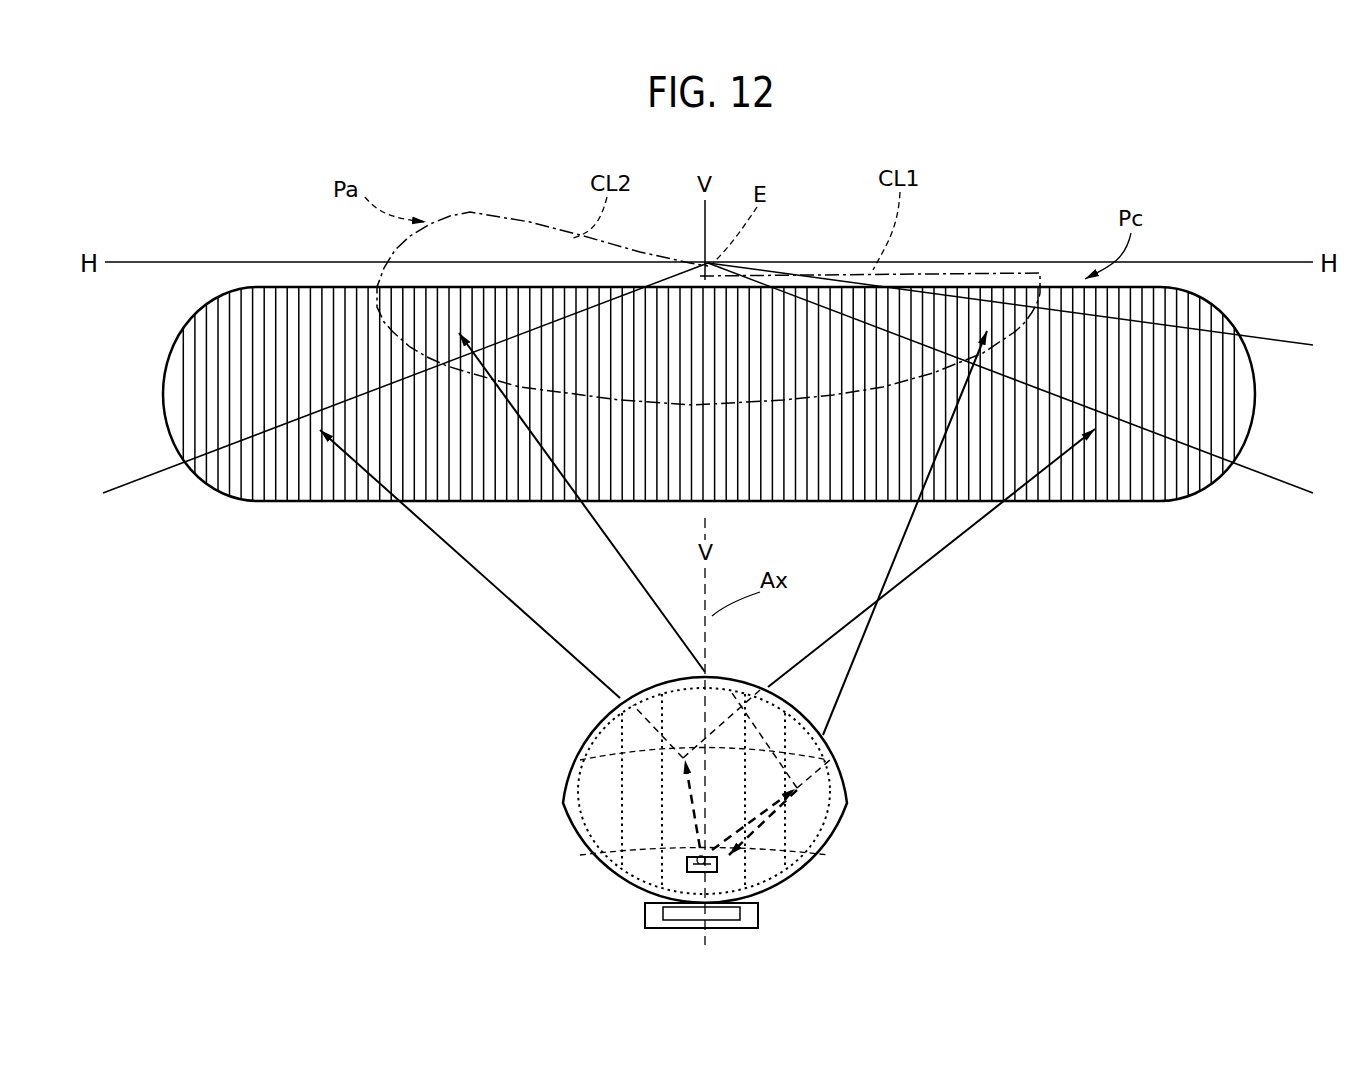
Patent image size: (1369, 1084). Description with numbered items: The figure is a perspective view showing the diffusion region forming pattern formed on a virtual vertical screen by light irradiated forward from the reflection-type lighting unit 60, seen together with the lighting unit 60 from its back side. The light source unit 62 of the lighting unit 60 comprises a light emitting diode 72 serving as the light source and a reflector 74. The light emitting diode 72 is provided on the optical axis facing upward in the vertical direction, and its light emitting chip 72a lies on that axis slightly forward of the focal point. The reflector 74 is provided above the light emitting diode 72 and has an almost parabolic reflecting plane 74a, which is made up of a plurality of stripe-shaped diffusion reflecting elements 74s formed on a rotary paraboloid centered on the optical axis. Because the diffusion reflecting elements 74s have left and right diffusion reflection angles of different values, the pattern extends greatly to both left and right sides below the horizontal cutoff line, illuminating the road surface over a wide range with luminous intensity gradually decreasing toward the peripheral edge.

The lighting unit 60 is at (992, 745).
The light source unit 62 is at (561, 716).
The light emitting diode 72 is at (822, 855).
The light emitting element 72a is at (627, 857).
The reflector 74 is at (837, 750).
The reflecting plane 74a is at (685, 710).
The diffusion reflecting elements 74s is at (640, 765).